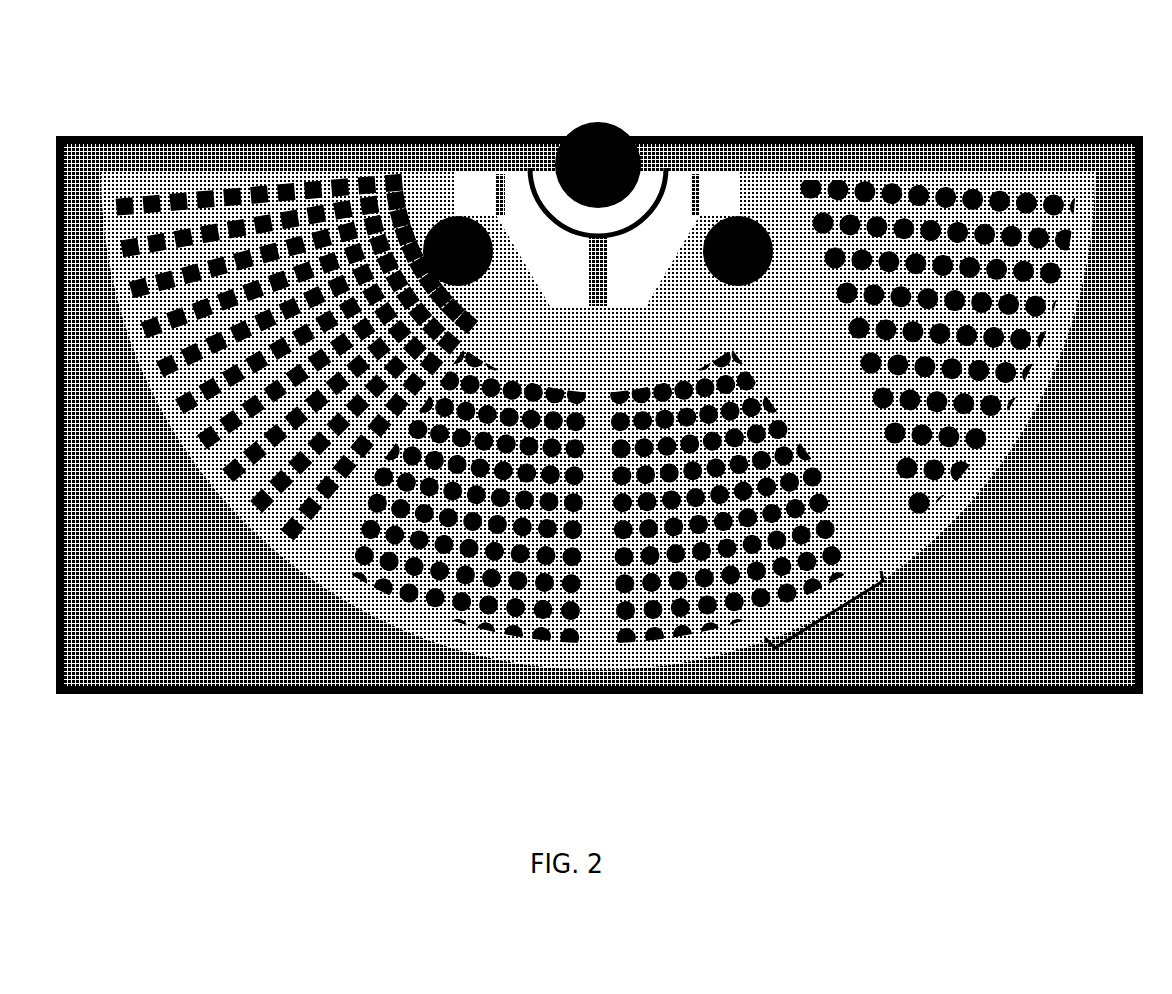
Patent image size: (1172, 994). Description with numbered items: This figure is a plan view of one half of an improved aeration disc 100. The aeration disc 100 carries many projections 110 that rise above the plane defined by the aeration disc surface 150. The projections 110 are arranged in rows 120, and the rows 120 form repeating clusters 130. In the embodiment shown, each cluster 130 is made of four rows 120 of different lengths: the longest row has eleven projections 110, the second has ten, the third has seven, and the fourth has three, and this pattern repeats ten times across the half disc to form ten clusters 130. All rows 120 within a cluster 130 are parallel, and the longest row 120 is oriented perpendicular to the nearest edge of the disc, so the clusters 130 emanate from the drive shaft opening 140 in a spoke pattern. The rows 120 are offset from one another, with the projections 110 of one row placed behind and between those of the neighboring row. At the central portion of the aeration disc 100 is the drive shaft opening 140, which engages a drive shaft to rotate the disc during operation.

The aeration disc 100 is at (242, 118).
The projections 110 is at (563, 638).
The rows 120 is at (680, 628).
The clusters 130 is at (827, 610).
The drive shaft opening 140 is at (588, 160).
The aeration disc surface 150 is at (197, 462).